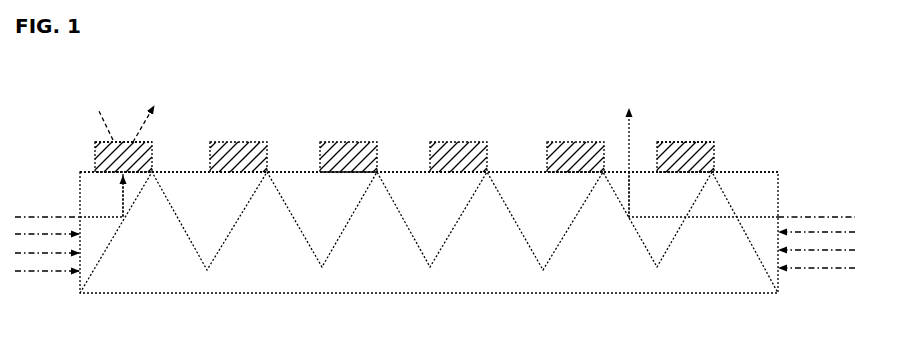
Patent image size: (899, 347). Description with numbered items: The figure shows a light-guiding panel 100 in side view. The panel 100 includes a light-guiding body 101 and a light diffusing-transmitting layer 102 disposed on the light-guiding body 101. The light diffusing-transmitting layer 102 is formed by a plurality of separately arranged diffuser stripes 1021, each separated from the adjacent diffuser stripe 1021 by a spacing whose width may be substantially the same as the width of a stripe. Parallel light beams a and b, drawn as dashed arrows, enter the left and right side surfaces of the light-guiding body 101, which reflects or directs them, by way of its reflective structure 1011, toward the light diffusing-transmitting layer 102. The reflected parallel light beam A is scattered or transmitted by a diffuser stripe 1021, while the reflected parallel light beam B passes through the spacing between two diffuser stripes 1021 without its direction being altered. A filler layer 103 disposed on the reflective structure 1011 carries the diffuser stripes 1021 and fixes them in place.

The light-guiding panel 100 is at (805, 115).
The light-guiding body 101 is at (769, 294).
The reflective structure 1011 is at (586, 241).
The light diffusing-transmitting layer 102 is at (714, 160).
The diffuser stripe 1021 is at (601, 141).
The filler layer 103 is at (678, 202).